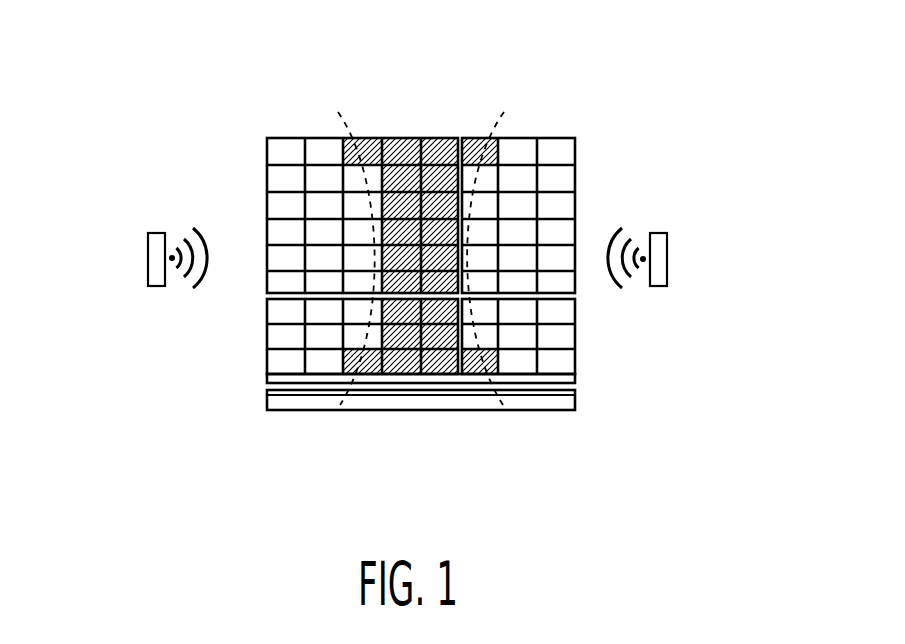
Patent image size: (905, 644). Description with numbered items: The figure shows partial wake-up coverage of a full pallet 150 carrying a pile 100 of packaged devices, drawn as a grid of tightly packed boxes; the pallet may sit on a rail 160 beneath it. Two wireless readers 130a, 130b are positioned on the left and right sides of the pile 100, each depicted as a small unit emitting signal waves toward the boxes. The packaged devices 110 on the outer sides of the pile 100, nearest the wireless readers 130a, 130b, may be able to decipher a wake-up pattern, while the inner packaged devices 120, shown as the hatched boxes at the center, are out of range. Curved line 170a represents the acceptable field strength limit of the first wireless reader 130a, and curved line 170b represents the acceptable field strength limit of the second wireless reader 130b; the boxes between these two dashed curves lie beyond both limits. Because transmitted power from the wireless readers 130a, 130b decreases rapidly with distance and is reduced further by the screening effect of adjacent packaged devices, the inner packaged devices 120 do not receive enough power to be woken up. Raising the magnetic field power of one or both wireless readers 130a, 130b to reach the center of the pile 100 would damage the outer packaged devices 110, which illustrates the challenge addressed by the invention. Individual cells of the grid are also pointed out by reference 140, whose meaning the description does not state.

The pile 100 is at (670, 97).
The packaged devices 110 is at (280, 153).
The inner packaged devices 120 is at (443, 112).
The first wireless reader 130a is at (150, 257).
The second wireless reader 130b is at (668, 258).
The pixel blocks 140 is at (445, 309).
The full pallet 150 is at (270, 382).
The rail 160 is at (570, 403).
The curved line 170a is at (363, 327).
The curved line 170b is at (479, 340).